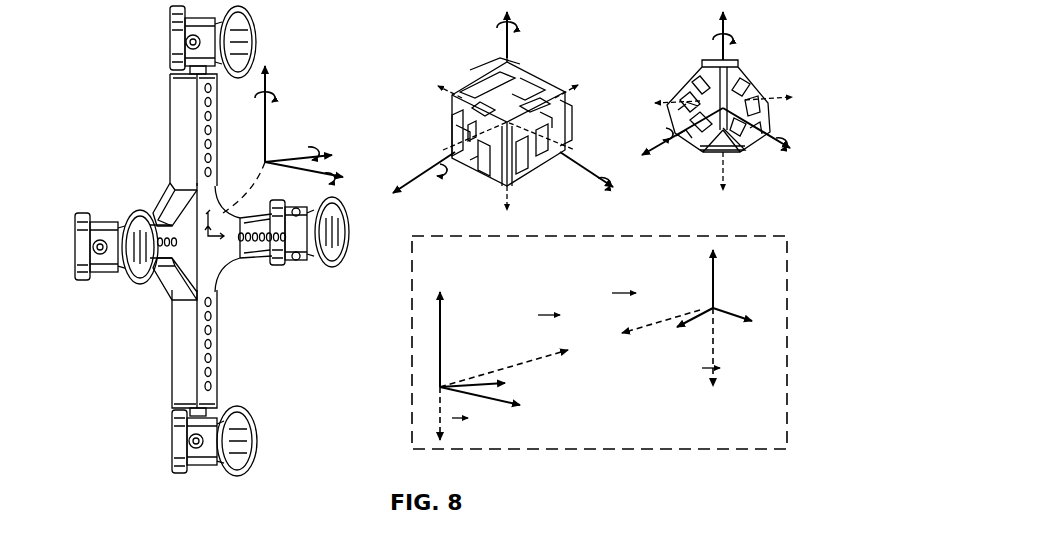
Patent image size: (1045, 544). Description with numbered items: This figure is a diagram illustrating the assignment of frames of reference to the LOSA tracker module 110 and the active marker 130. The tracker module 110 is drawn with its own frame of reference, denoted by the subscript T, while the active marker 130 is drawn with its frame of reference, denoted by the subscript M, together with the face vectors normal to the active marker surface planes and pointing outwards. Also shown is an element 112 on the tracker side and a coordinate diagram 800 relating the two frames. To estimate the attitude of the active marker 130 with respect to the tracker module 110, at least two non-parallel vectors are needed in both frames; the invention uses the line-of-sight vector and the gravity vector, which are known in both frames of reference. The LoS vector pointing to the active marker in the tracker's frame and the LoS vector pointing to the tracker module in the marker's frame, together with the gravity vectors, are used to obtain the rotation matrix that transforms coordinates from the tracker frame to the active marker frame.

The LOSA tracker module 110 is at (216, 241).
The tool arm 112 is at (187, 150).
The active marker 130 is at (595, 111).
The coordinate frame diagram 800 is at (599, 342).